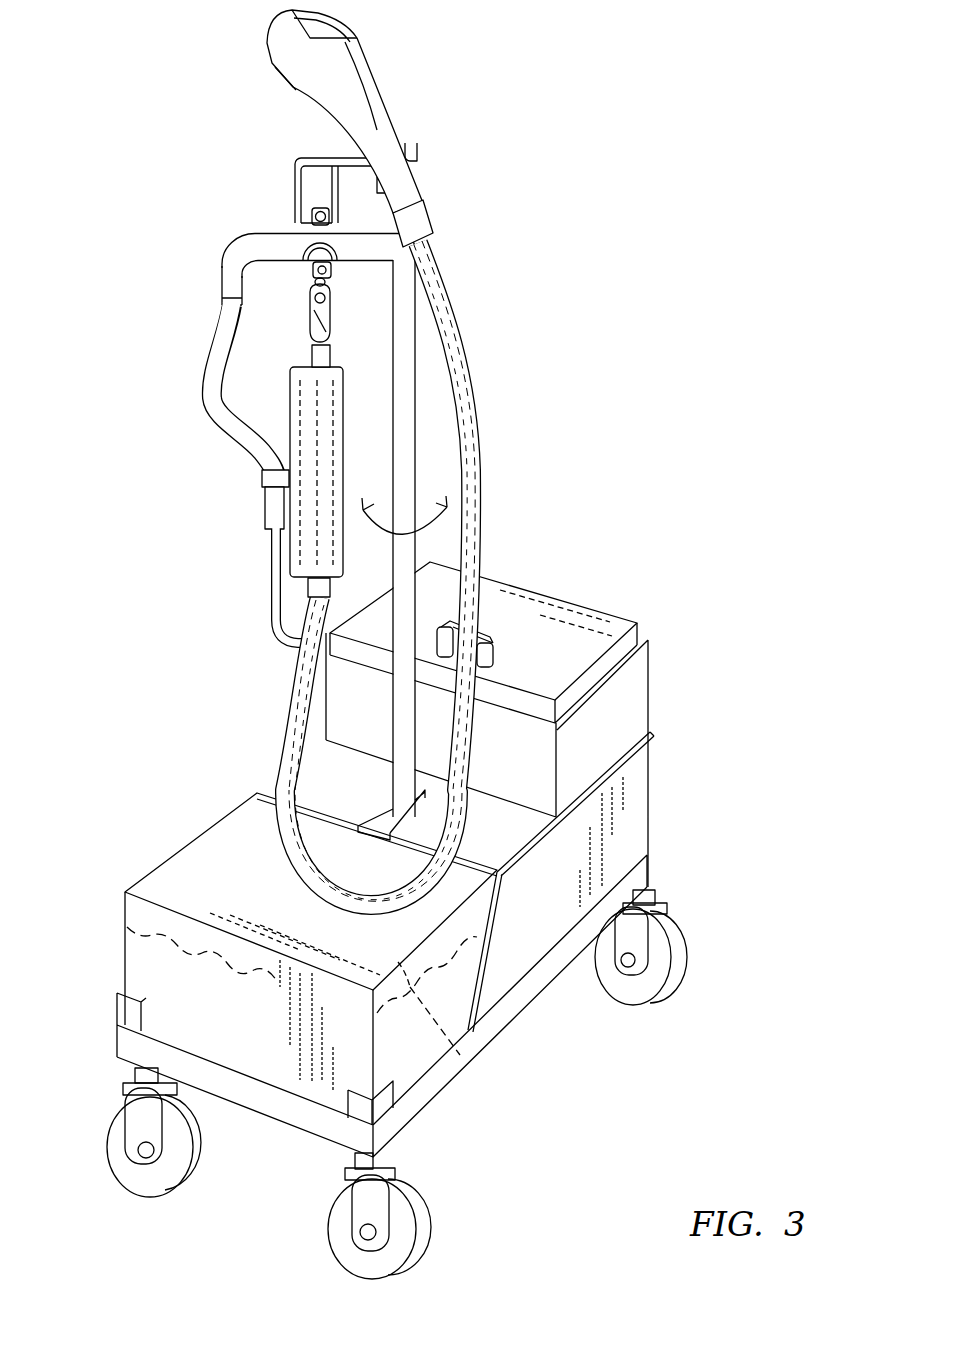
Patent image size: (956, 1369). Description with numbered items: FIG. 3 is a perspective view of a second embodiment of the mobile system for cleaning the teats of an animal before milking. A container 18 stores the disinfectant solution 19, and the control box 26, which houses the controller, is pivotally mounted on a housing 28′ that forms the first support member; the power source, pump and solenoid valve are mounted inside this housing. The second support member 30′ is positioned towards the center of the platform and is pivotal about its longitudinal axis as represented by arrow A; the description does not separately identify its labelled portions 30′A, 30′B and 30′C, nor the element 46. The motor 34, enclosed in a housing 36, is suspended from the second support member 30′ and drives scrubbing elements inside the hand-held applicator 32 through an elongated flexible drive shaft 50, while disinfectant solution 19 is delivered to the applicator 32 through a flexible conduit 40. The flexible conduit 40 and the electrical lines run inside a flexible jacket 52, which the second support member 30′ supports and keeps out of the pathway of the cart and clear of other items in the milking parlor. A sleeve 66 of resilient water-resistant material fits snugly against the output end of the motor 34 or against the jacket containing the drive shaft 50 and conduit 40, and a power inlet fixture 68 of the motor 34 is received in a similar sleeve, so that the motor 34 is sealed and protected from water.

The container 18 is at (240, 884).
The disinfectant solution 19 is at (460, 1055).
The control box 26 is at (655, 678).
The housing 28′ is at (668, 762).
The second support member 30′ is at (425, 382).
The vertical post 30′A is at (393, 338).
The horizontal arm 30′B is at (268, 232).
The downward arm end 30′C is at (221, 285).
The hand-held applicator 32 is at (382, 82).
The motor 34 is at (337, 432).
The housing 36 is at (289, 392).
The flexible conduit 40 is at (280, 600).
The discharge hose 46 is at (300, 700).
The elongated flexible drive shaft 50 is at (284, 748).
The flexible jacket 52 is at (206, 370).
The sleeve 66 is at (315, 586).
The power inlet fixture 68 is at (266, 508).
The arrow A is at (410, 548).